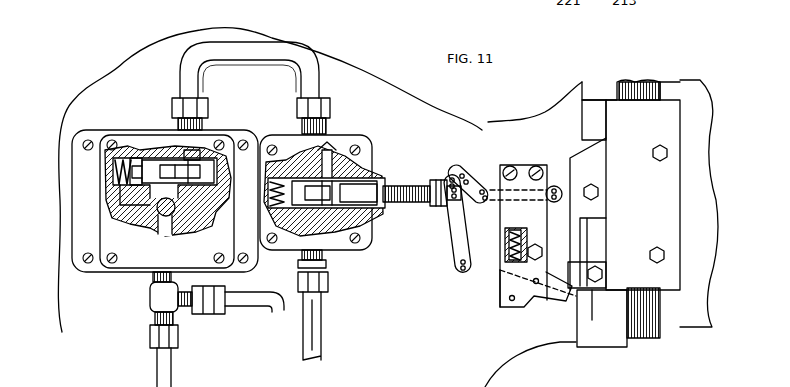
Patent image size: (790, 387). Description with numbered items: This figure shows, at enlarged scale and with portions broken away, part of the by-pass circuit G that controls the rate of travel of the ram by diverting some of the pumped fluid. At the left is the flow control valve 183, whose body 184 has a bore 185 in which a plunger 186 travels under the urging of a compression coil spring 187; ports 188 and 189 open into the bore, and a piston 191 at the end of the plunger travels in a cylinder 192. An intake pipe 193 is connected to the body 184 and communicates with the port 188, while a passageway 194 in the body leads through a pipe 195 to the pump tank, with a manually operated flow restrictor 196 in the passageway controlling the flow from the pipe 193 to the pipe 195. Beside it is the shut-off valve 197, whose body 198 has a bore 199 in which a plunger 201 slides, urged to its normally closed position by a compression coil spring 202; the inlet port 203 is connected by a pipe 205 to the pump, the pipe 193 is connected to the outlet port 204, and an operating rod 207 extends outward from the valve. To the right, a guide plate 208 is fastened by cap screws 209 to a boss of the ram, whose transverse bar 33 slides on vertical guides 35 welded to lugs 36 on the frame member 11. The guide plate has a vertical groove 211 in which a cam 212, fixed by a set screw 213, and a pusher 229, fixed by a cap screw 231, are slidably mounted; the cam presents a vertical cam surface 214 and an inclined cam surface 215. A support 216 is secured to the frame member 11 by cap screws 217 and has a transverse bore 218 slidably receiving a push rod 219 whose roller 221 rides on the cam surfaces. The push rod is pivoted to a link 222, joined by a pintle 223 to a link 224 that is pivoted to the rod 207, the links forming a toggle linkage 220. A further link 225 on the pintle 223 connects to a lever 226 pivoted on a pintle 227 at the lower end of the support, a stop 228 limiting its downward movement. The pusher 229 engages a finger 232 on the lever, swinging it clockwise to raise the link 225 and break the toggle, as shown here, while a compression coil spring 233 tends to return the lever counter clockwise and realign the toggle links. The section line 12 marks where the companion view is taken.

The end frame member 11 is at (96, 310).
The section line indicator 12 is at (508, 196).
The transverse bar 33 is at (700, 238).
The vertical guide 35 is at (654, 336).
The lug 36 is at (621, 334).
The by-pass circuit G is at (178, 98).
The flow control valve 183 is at (104, 131).
The body 184 is at (148, 148).
The bore 185 is at (172, 158).
The plunger 186 is at (127, 196).
The compression coil spring 187 is at (113, 162).
The port 188 is at (192, 150).
The port 189 is at (142, 208).
The piston 191 is at (136, 160).
The cylinder 192 is at (122, 181).
The intake pipe 193 is at (200, 62).
The passageway 194 is at (163, 230).
The pipe 195 is at (165, 370).
The flow restrictor 196 is at (173, 213).
The shut-off valve 197 is at (352, 144).
The body 198 is at (344, 166).
The bore 199 is at (302, 178).
The plunger 201 is at (346, 250).
The compression coil spring 202 is at (298, 266).
The inlet port 203 is at (328, 266).
The outlet port 204 is at (328, 162).
The pipe 205 is at (312, 330).
The operating rod 207 is at (382, 198).
The guide plate 208 is at (666, 116).
The cap screws 209 is at (667, 154).
The groove 211 is at (592, 122).
The cam 212 is at (582, 165).
The set screw 213 is at (598, 192).
The vertical cam surface 214 is at (580, 156).
The inclined cam surface 215 is at (590, 210).
The support 216 is at (540, 166).
The cap screws 217 is at (522, 168).
The transverse bore 218 is at (508, 166).
The push rod 219 is at (552, 198).
The toggle linkage 220 is at (445, 204).
The roller 221 is at (560, 227).
The link 222 is at (482, 188).
The pintle 223 is at (468, 170).
The link 224 is at (455, 184).
The link 225 is at (460, 232).
The lever 226 is at (494, 280).
The pintle 227 is at (537, 300).
The stop 228 is at (513, 300).
The pusher 229 is at (582, 280).
The cap screw 231 is at (602, 274).
The finger 232 is at (560, 300).
The compression coil spring 233 is at (500, 302).